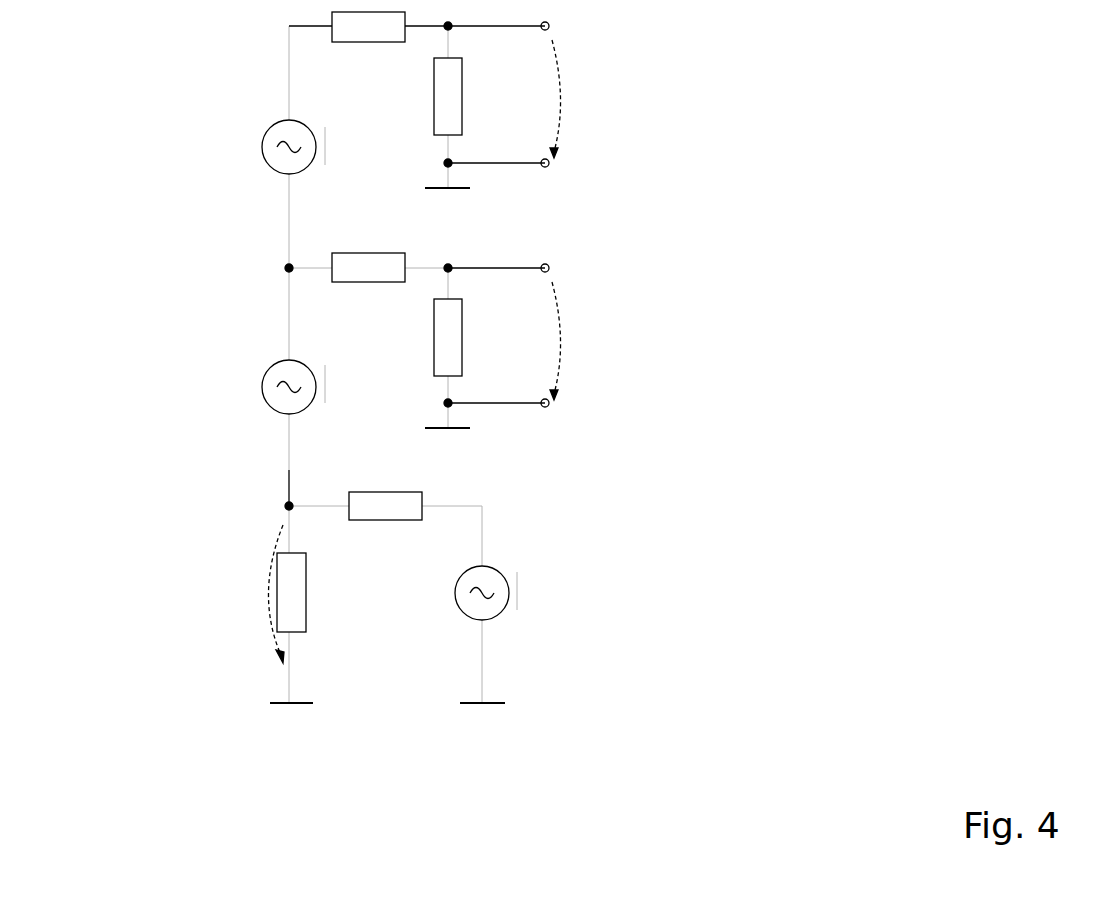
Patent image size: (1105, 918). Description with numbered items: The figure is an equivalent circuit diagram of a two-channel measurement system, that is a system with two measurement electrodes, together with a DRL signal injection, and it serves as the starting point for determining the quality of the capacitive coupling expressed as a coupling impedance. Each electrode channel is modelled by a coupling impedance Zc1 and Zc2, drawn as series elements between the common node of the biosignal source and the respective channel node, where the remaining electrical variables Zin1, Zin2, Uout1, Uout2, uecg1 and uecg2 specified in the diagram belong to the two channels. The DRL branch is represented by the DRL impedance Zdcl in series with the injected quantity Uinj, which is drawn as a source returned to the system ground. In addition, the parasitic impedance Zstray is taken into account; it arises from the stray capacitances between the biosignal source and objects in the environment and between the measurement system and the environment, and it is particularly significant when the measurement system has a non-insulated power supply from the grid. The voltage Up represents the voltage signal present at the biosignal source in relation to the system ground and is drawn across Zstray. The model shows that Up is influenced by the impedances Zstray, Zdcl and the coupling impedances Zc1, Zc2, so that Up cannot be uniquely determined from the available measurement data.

The coupling impedance Zc1 is at (368, 76).
The input impedance 1 Zin1 is at (472, 96).
The output voltage 1 Uout1 is at (581, 101).
The ECG source voltage 1 uecg1 is at (321, 164).
The coupling impedance Zc2 is at (368, 317).
The input impedance 2 Zin2 is at (472, 337).
The output voltage 2 Uout2 is at (581, 348).
The ECG source voltage 2 uecg2 is at (321, 403).
The DRL impedance Zdcl is at (384, 481).
The injected voltage source Uinj is at (513, 610).
The parasitic impedance Zstray is at (324, 592).
The voltage signal at the biosignal source Up is at (250, 601).